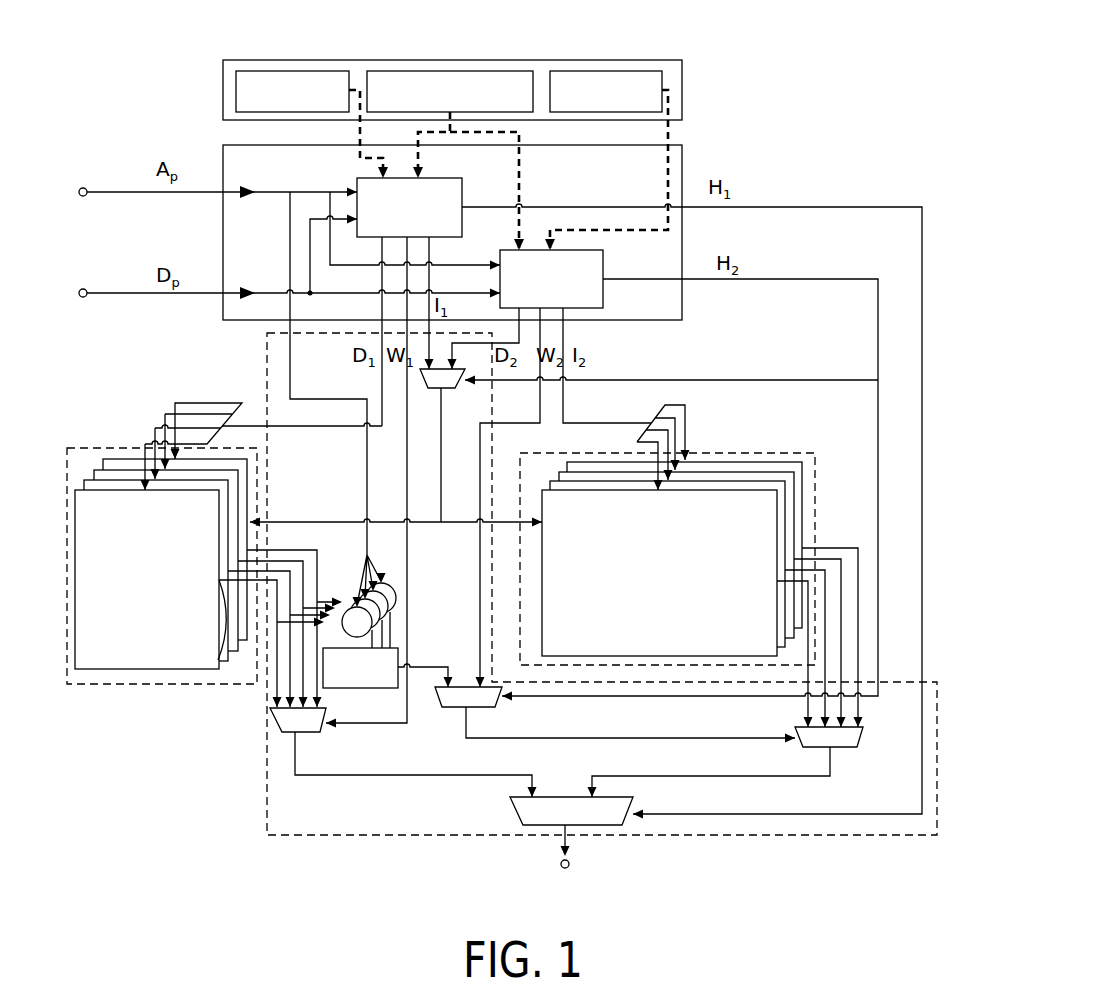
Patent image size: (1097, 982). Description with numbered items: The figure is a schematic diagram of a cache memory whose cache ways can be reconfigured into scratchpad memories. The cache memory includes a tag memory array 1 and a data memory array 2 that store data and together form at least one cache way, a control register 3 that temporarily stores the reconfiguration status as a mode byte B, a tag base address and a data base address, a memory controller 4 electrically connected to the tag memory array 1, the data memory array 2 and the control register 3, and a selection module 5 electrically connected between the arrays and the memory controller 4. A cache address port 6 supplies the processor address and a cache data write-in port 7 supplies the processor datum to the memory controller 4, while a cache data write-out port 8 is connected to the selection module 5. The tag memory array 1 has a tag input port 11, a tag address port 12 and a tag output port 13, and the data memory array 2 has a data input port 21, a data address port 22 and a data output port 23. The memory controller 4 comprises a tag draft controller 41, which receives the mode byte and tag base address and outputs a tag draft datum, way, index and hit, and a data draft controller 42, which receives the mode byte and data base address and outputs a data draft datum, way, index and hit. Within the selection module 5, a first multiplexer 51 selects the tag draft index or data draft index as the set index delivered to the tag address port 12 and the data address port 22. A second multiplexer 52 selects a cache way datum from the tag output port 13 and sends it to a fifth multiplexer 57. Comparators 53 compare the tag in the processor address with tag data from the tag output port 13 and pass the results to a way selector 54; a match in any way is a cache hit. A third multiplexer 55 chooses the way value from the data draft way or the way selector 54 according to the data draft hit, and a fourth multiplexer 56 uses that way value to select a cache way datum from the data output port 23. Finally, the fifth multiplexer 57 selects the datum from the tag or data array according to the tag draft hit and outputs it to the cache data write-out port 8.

The tag memory array 1 is at (114, 688).
The data memory array 2 is at (738, 443).
The control register 3 is at (540, 60).
The memory controller 4 is at (682, 158).
The selection module 5 is at (267, 362).
The cache address port 6 is at (84, 188).
The cache data write-in port 7 is at (84, 297).
The cache data write-out port 8 is at (569, 866).
The tag input port 11 is at (145, 448).
The tag address port 12 is at (258, 512).
The tag output port 13 is at (218, 660).
The data input port 21 is at (658, 493).
The data address port 22 is at (545, 524).
The data output port 23 is at (782, 573).
The tag draft controller 41 is at (357, 185).
The data draft controller 42 is at (603, 258).
The first multiplexer 51 is at (433, 392).
The second multiplexer 52 is at (282, 735).
The comparators 53 is at (395, 592).
The way selector 54 is at (357, 688).
The third multiplexer 55 is at (438, 707).
The fourth multiplexer 56 is at (858, 748).
The fifth multiplexer 57 is at (517, 815).